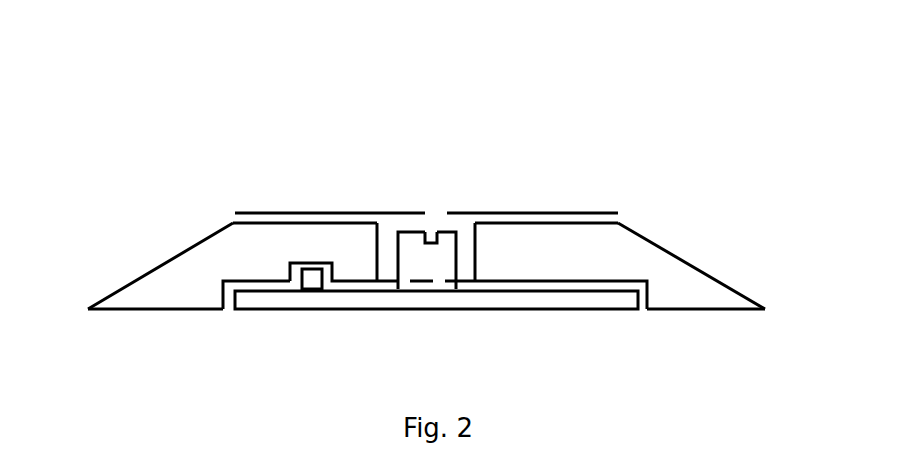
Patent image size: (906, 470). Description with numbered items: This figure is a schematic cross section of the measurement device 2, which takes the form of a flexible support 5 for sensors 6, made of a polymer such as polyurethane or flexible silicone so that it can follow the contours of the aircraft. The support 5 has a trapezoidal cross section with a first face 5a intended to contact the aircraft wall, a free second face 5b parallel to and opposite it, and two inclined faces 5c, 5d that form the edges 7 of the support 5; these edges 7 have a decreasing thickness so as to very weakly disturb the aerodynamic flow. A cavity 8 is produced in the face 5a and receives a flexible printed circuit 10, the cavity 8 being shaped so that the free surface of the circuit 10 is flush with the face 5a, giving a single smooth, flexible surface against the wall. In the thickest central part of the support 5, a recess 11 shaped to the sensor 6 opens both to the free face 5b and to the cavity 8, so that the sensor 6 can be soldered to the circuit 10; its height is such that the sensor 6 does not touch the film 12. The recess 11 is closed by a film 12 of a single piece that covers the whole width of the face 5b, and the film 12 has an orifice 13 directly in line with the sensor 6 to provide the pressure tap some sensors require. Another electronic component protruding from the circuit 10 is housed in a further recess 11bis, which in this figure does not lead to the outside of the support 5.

The measurement device 2 is at (218, 141).
The support 5 is at (628, 242).
The first face 5a is at (697, 312).
The free second face 5b is at (602, 217).
The face forming an edge 5c is at (205, 240).
The face forming an edge 5d is at (688, 262).
The sensor 6 is at (435, 262).
The edges 7 is at (137, 278).
The cavity 8 is at (229, 295).
The flexible printed circuit 10 is at (592, 312).
The recess 11 is at (388, 260).
The recess 11bis is at (299, 278).
The film 12 is at (392, 213).
The orifice 13 is at (437, 213).